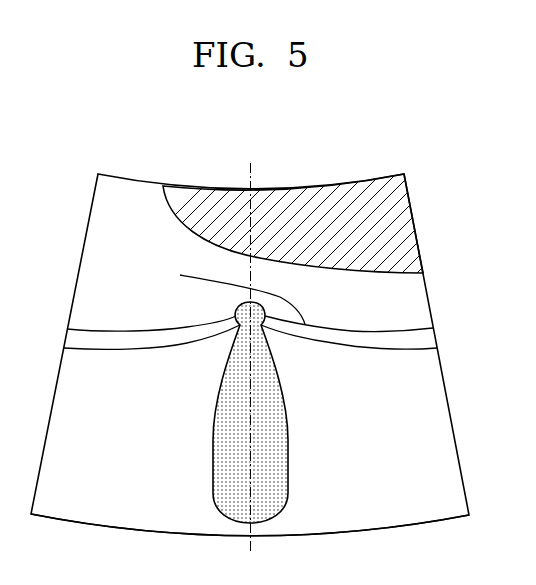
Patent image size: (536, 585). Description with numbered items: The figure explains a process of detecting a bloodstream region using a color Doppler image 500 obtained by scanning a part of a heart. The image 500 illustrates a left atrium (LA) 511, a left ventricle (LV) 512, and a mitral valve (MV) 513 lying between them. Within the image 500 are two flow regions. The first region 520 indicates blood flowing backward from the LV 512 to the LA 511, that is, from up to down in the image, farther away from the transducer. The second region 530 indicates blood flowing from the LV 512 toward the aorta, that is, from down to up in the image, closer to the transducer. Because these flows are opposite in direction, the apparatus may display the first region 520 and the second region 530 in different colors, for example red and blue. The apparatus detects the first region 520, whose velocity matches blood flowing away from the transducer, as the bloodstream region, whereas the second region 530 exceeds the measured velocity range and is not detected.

The color Doppler image 500 is at (122, 496).
The left atrium (LA) 511 is at (250, 496).
The left ventricle (LV) 512 is at (295, 299).
The mitral valve (MV) 513 is at (145, 340).
The first region 520 is at (218, 425).
The second region 530 is at (314, 197).